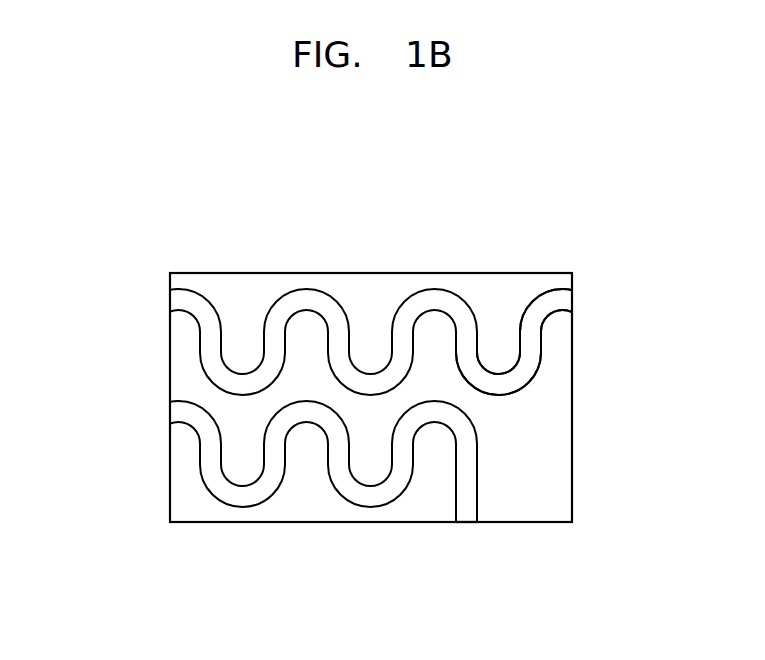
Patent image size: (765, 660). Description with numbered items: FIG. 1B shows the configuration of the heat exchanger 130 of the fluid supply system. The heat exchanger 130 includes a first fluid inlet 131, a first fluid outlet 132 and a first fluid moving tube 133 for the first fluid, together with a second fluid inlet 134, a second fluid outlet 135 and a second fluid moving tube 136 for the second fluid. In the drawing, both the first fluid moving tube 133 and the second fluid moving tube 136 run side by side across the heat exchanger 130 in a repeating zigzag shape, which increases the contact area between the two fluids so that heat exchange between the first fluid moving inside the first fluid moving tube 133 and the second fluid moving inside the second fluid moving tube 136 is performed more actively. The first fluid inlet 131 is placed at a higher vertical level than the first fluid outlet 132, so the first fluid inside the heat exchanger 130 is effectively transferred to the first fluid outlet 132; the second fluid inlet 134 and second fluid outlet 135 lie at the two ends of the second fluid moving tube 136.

The heat exchanger 130 is at (586, 202).
The first fluid inlet 131 is at (170, 413).
The first fluid outlet 132 is at (468, 523).
The first fluid moving tube 133 is at (467, 463).
The second fluid inlet 134 is at (170, 301).
The second fluid outlet 135 is at (575, 300).
The second fluid moving tube 136 is at (530, 355).